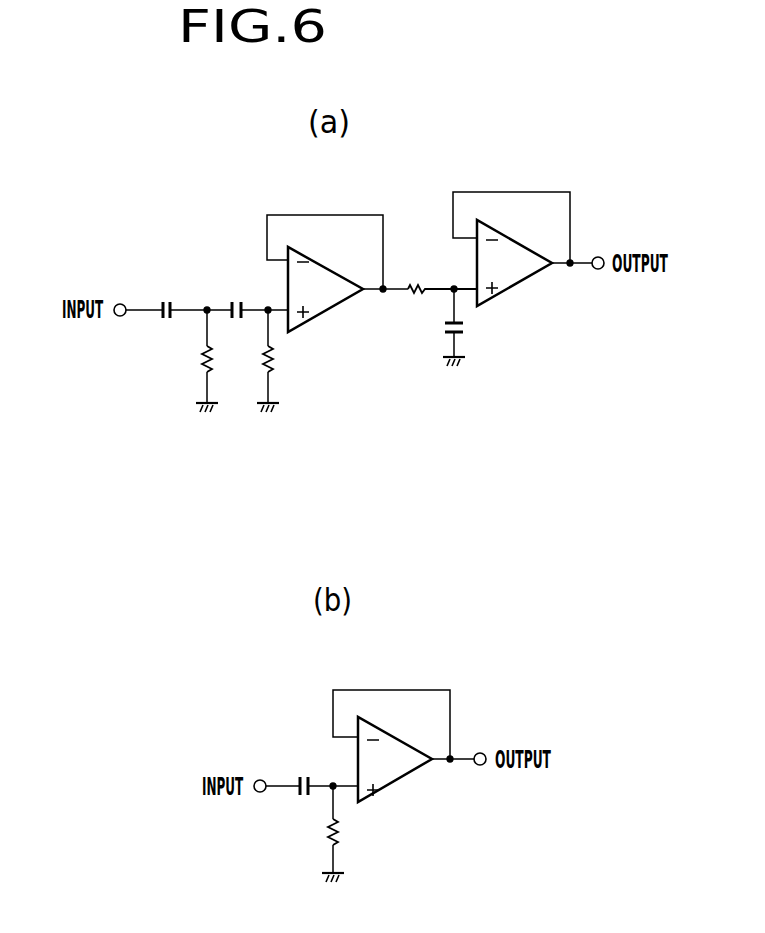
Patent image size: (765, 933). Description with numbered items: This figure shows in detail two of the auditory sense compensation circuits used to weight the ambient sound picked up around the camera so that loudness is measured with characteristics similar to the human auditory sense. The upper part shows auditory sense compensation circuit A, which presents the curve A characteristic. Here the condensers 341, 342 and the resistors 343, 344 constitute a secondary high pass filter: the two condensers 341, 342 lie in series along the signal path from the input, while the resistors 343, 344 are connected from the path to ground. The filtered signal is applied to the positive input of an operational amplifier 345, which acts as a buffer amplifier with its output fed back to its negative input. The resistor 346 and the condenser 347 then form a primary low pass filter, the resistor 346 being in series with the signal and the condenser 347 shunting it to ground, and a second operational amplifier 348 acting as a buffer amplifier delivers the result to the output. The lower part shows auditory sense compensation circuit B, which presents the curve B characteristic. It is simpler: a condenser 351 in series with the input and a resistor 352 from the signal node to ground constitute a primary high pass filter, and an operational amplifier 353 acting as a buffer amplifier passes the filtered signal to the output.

The condenser 341 is at (179, 288).
The condenser 342 is at (236, 288).
The resistor 343 is at (187, 361).
The resistor 344 is at (292, 361).
The operational amplifier 345 is at (337, 284).
The resistor 346 is at (442, 264).
The condenser 347 is at (480, 327).
The operational amplifier 348 is at (522, 256).
The condenser 351 is at (309, 764).
The resistor 352 is at (318, 834).
The operational amplifier 353 is at (403, 756).